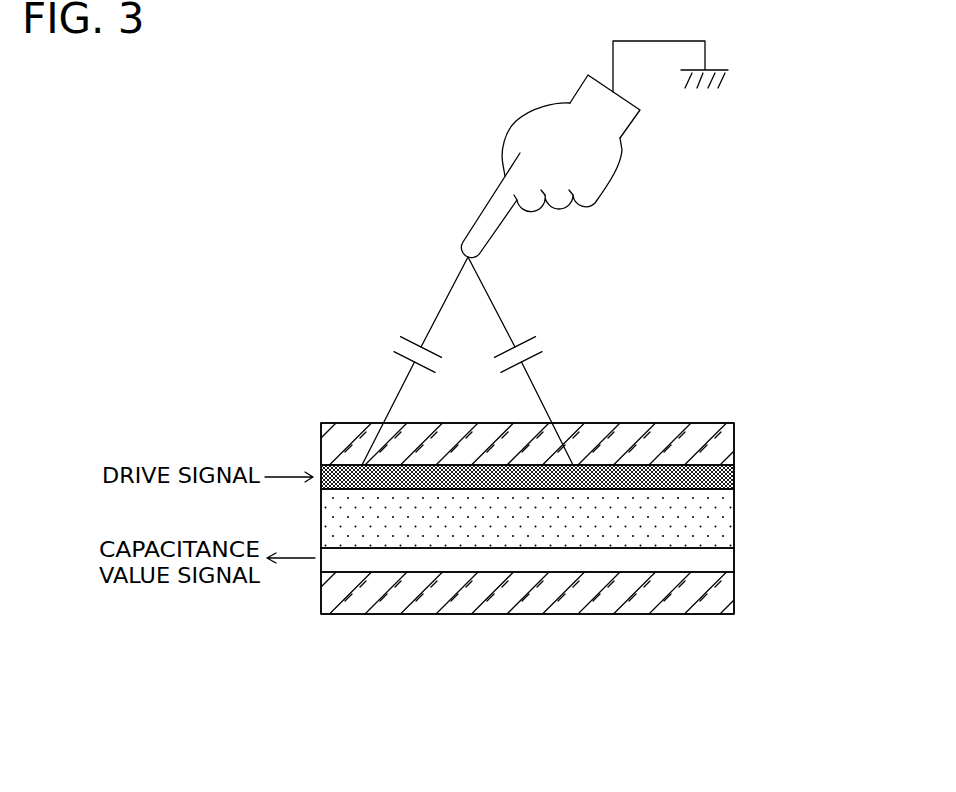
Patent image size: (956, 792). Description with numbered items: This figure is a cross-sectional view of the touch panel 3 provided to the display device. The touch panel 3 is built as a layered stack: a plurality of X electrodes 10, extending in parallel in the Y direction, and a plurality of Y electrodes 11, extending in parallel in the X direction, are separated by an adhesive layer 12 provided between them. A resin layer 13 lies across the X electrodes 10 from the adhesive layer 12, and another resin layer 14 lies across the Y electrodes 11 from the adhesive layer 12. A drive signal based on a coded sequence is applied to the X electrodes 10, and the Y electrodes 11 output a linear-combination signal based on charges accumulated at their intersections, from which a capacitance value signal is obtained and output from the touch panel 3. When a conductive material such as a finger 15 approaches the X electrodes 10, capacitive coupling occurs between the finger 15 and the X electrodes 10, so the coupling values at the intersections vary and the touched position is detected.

The touch panel 3 is at (818, 397).
The X electrodes 10 is at (727, 478).
The Y electrodes 11 is at (727, 561).
The adhesive layer 12 is at (727, 522).
The resin layer 13 is at (725, 447).
The resin layer 14 is at (727, 594).
The finger 15 is at (525, 123).